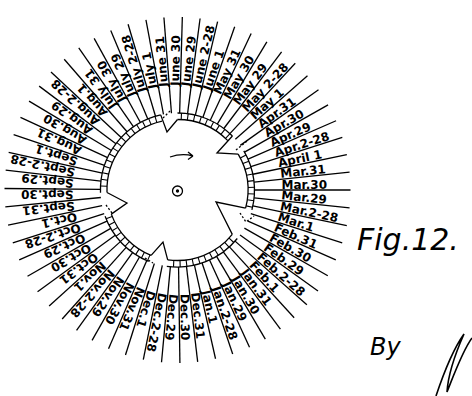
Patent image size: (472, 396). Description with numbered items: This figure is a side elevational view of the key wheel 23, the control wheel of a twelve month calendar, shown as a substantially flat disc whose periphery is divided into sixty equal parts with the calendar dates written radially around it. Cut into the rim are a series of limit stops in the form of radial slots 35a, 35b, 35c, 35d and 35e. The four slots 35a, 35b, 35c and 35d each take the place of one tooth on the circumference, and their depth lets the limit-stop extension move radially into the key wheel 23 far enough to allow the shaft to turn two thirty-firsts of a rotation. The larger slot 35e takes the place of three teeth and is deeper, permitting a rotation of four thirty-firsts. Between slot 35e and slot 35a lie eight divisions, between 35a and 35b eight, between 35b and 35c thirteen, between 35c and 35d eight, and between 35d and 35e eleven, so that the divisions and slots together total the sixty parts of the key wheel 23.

The key wheel 23 is at (177, 190).
The radial slot 35a is at (220, 142).
The radial slot 35b is at (160, 131).
The radial slot 35c is at (122, 196).
The radial slot 35d is at (157, 255).
The larger radial slot 35e is at (228, 212).